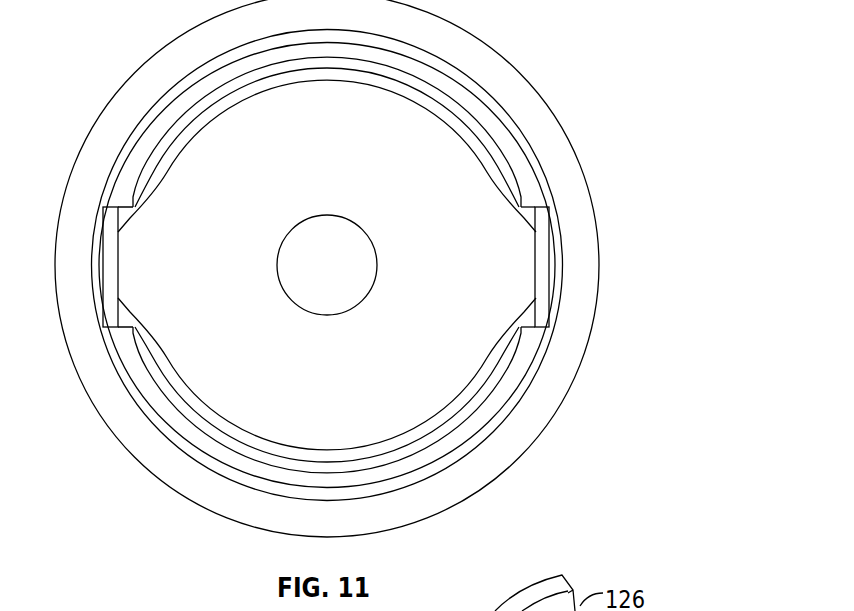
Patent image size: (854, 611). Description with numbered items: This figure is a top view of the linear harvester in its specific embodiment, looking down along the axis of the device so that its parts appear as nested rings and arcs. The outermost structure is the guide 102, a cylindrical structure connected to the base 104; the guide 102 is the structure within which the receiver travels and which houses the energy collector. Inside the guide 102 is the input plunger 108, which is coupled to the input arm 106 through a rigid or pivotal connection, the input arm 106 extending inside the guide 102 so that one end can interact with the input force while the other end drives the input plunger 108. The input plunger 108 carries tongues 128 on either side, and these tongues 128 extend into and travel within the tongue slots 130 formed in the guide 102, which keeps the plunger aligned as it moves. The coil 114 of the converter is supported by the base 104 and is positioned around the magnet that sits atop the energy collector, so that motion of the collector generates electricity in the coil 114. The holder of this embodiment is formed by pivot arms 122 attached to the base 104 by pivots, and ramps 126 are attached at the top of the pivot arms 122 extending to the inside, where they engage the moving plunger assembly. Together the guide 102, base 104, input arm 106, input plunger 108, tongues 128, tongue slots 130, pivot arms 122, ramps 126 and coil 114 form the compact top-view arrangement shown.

The guide 102 is at (433, 93).
The base 104 is at (538, 125).
The input arm 106 is at (335, 275).
The input plunger 108 is at (243, 135).
The coil 114 is at (505, 407).
The pivot arms 122 is at (557, 300).
The ramps 126 is at (542, 260).
The tongues 128 is at (493, 245).
The tongue slots 130 is at (513, 320).